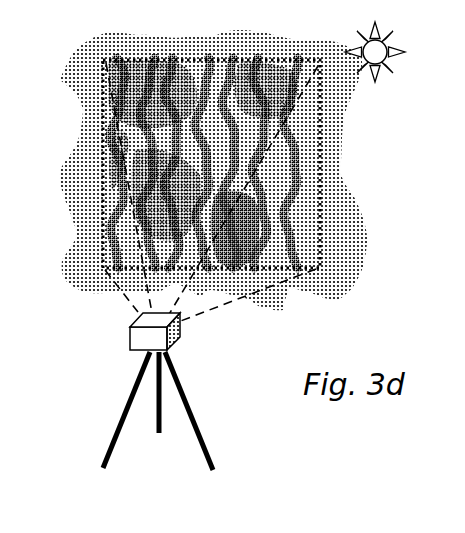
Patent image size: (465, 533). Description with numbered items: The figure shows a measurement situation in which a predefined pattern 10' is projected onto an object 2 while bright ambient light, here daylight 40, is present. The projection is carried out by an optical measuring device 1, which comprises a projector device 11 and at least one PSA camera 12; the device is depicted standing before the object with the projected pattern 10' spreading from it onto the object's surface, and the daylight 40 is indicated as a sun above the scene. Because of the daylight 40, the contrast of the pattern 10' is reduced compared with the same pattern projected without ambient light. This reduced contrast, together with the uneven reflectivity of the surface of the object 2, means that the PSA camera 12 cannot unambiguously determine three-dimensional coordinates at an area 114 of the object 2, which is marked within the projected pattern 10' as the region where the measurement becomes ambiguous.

The optical measuring device 1 is at (147, 391).
The projector device 11 is at (102, 341).
The PSA camera 12 is at (142, 342).
The object 2 is at (307, 288).
The pattern 10' is at (229, 170).
The area 114 is at (235, 228).
The daylight 40 is at (382, 83).